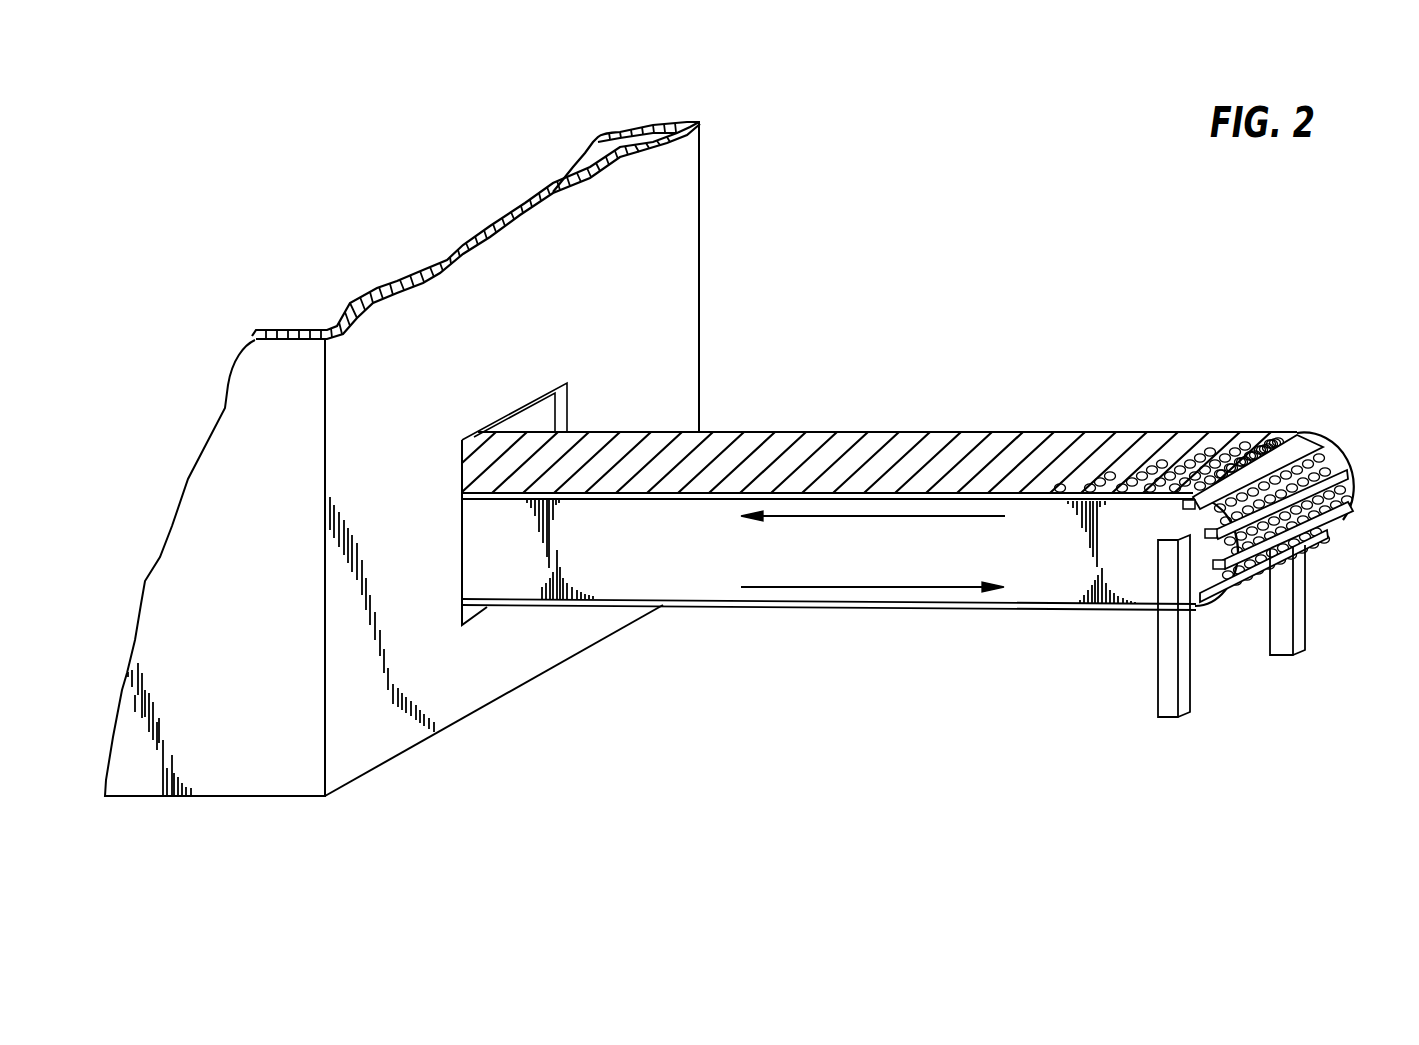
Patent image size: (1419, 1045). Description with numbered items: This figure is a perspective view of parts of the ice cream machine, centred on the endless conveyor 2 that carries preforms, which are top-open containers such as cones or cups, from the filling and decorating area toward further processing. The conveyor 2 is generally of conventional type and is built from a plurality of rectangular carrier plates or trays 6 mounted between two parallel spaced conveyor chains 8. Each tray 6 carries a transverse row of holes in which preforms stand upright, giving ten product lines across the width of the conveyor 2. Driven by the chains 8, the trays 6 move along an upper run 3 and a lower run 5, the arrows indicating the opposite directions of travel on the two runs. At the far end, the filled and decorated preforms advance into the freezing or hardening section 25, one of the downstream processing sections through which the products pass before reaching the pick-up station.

The endless conveyor 2 is at (930, 535).
The upper run 3 is at (817, 516).
The lower run 5 is at (855, 587).
The carrier plates or trays 6 is at (1323, 440).
The conveyor chains 8 is at (1340, 457).
The freezing or hardening section 25 is at (653, 263).